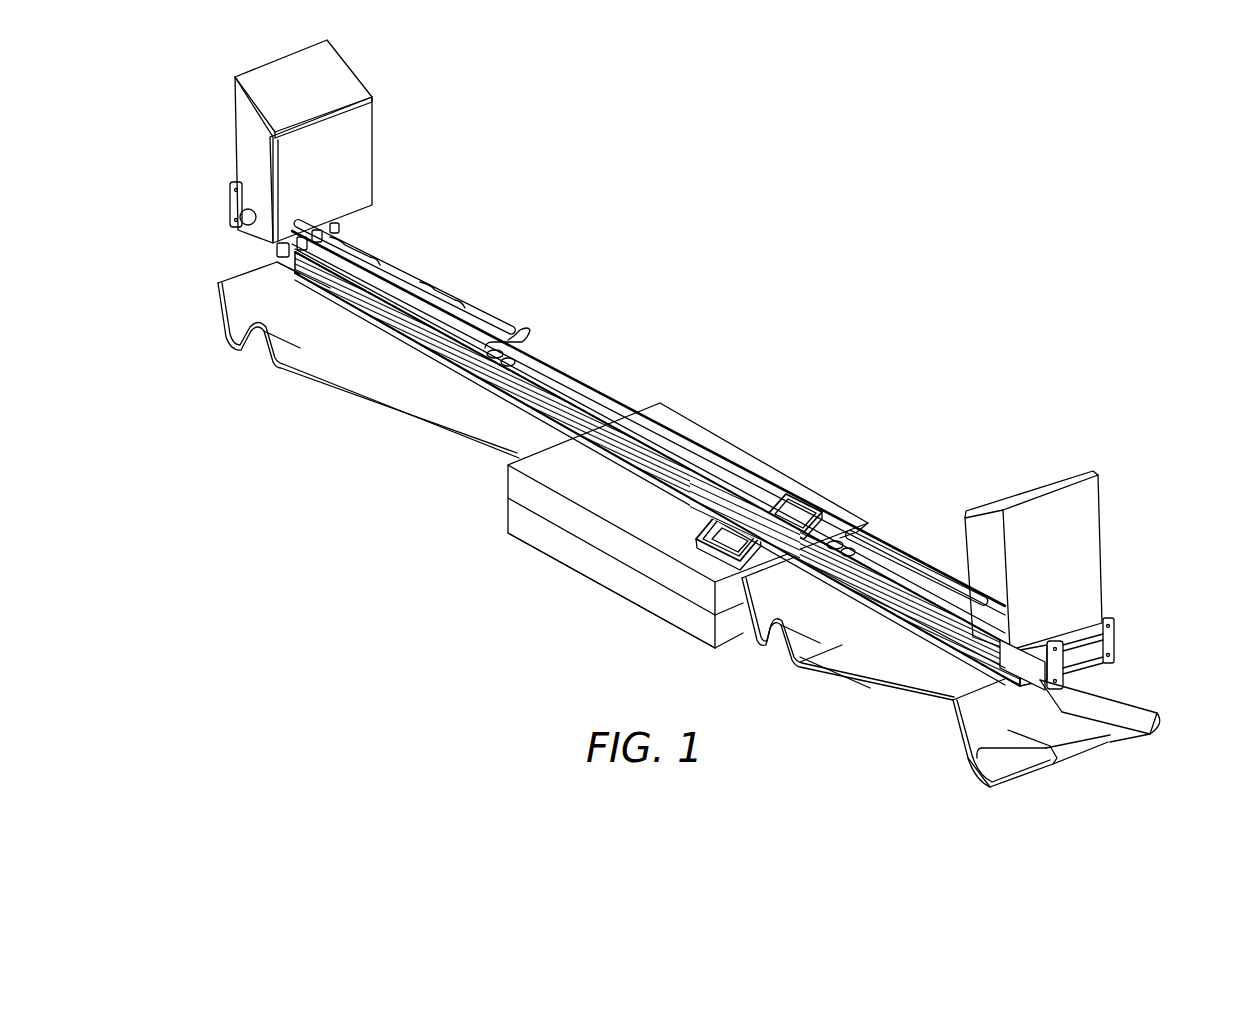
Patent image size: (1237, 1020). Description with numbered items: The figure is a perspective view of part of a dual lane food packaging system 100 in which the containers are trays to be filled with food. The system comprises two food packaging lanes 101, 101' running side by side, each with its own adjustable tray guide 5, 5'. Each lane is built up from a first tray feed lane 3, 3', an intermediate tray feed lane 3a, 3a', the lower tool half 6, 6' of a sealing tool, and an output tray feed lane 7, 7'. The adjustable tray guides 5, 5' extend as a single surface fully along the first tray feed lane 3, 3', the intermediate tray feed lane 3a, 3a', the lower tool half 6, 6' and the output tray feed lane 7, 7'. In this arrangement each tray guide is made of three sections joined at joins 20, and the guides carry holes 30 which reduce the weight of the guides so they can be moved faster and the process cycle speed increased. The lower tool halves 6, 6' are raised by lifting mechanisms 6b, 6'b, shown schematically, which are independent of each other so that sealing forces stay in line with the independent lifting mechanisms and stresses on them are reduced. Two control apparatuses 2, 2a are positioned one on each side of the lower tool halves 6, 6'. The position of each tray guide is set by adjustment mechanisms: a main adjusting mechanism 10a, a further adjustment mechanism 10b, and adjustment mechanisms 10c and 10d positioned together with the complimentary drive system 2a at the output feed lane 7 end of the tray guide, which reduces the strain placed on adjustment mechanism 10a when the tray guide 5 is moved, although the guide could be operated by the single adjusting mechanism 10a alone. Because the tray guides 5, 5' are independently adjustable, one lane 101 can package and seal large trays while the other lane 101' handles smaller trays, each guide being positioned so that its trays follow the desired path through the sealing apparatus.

The dual lane food packaging system 100 is at (738, 319).
The food packaging lane 101 is at (1007, 804).
The food packaging lane 101' is at (1180, 747).
The control apparatus 2 is at (1093, 545).
The control apparatus 2a is at (244, 111).
The first tray feed lane 3 is at (1031, 738).
The first tray feed lane 3' is at (1100, 701).
The intermediate tray feed lane 3a is at (848, 642).
The intermediate tray feed lane 3a' is at (900, 599).
The adjustable tray guide 5 is at (650, 482).
The adjustable tray guide 5' is at (650, 441).
The lower tool half 6 is at (604, 556).
The lower tool half 6' is at (688, 487).
The lifting mechanism 6b is at (508, 513).
The lifting mechanism 6'b is at (871, 498).
The output tray feed lane 7 is at (368, 360).
The output tray feed lane 7' is at (648, 429).
The adjustment mechanism 10a is at (844, 596).
The adjustment mechanism 10b is at (892, 549).
The adjustment mechanism 10c is at (327, 304).
The adjustment mechanism 10d is at (463, 304).
The joins 20 is at (780, 548).
The holes 30 is at (713, 480).